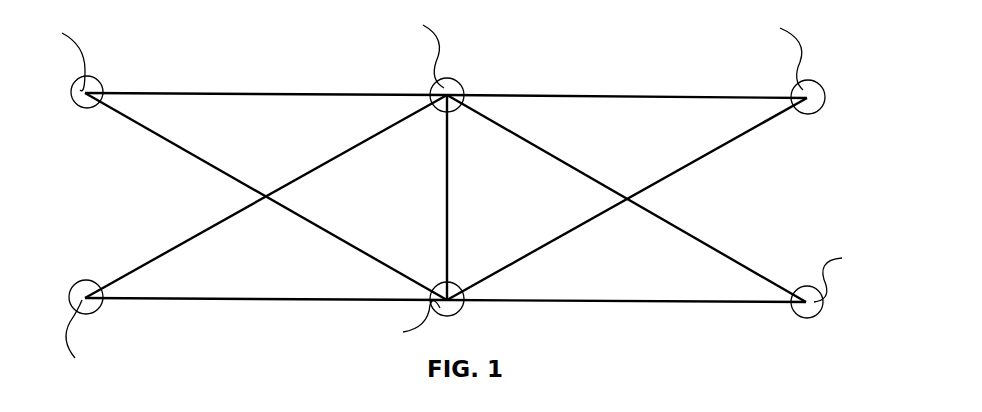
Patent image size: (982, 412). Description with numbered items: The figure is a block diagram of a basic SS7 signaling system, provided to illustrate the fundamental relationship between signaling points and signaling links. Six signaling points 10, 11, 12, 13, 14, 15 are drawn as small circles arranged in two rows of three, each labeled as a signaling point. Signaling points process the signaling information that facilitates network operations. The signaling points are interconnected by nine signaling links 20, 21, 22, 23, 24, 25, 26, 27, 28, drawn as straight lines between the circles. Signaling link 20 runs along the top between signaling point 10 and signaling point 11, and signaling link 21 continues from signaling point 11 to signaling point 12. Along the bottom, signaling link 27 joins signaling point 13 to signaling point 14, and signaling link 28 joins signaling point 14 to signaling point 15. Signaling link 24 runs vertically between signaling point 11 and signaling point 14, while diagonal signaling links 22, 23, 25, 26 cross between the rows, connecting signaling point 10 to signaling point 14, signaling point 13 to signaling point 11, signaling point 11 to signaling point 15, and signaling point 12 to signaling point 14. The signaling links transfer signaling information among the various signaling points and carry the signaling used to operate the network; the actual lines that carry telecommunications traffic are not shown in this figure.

The signaling point 10 is at (88, 73).
The signaling point 11 is at (445, 80).
The signaling point 12 is at (807, 82).
The signaling point 13 is at (85, 315).
The signaling point 14 is at (448, 317).
The signaling point 15 is at (807, 320).
The signaling link 20 is at (258, 93).
The signaling link 21 is at (634, 95).
The signaling link 22 is at (197, 158).
The signaling link 23 is at (327, 163).
The signaling link 24 is at (447, 197).
The signaling link 25 is at (510, 133).
The signaling link 26 is at (690, 165).
The signaling link 27 is at (257, 300).
The signaling link 28 is at (633, 300).